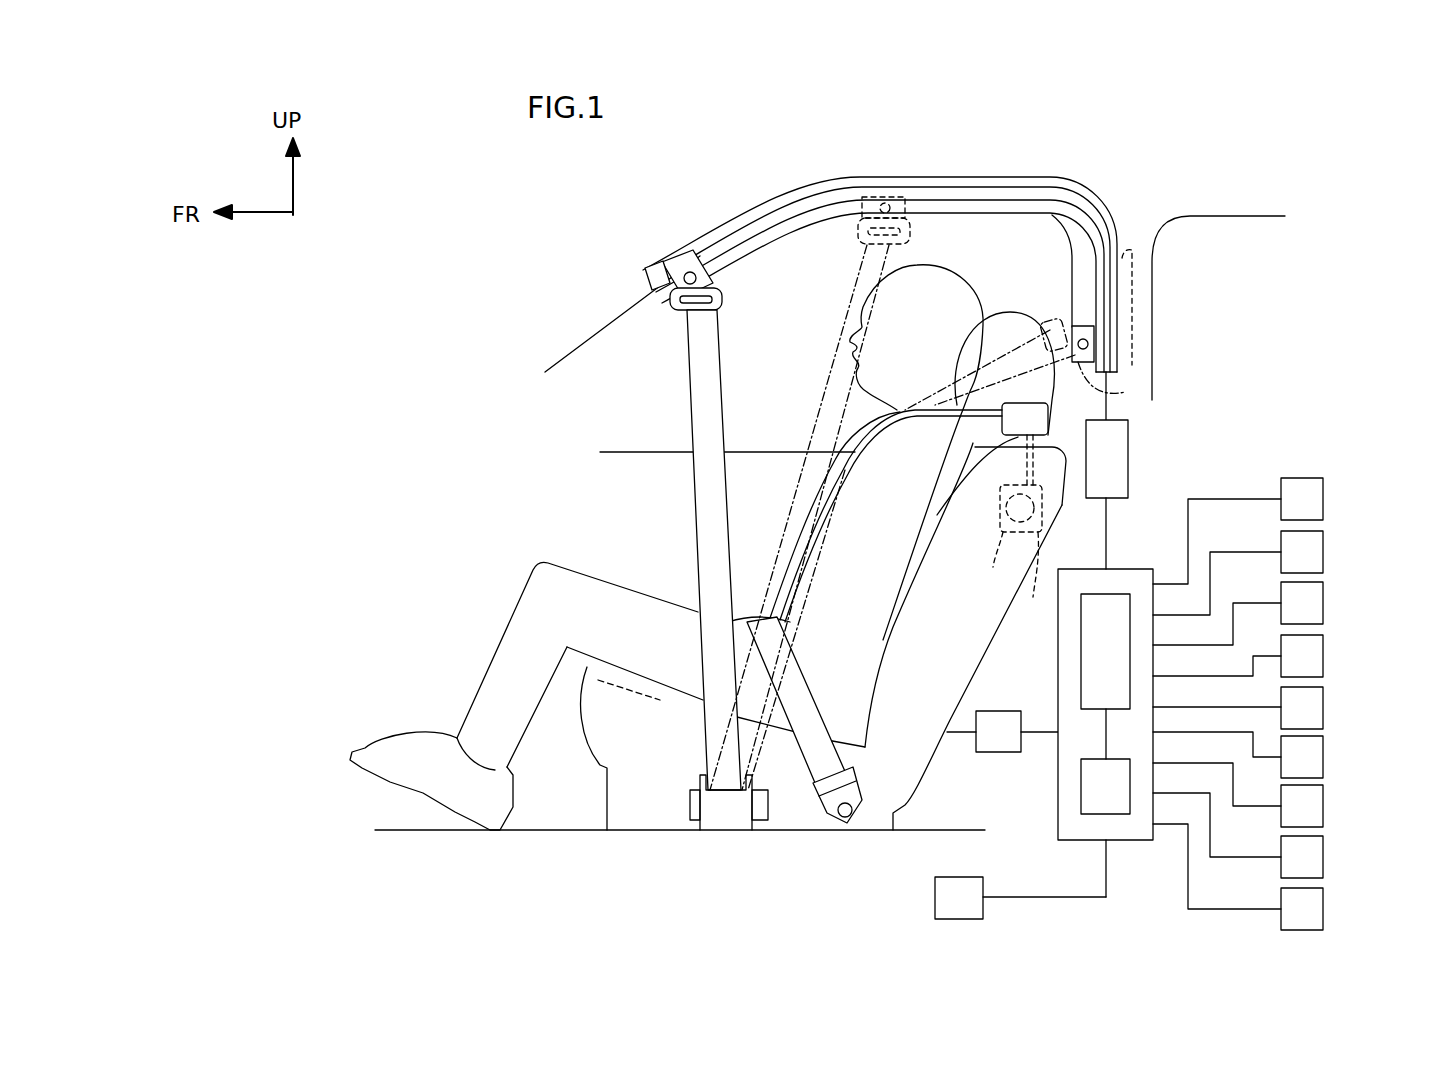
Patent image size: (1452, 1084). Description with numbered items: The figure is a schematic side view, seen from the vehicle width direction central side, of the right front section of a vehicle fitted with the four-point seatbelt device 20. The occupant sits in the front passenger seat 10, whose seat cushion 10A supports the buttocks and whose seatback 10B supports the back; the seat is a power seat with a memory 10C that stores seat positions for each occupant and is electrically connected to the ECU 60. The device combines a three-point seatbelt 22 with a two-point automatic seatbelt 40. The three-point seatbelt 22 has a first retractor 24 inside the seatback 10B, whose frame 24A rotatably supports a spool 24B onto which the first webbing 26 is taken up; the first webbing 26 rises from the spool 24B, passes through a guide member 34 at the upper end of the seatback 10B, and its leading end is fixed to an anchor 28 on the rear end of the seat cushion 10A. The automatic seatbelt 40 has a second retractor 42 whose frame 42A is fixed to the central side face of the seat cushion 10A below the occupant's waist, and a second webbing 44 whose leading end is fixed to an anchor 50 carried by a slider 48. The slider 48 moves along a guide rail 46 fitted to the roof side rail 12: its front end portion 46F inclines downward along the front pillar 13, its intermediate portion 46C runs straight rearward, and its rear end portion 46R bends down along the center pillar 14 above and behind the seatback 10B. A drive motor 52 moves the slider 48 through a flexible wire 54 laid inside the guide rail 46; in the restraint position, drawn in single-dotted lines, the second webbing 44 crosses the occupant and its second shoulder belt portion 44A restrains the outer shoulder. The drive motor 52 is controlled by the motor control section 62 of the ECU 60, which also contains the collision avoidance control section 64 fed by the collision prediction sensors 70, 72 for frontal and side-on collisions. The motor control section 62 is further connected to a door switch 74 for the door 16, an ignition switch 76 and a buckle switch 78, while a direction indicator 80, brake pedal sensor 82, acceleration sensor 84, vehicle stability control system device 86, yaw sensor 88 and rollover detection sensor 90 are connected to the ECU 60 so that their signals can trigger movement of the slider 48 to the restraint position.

The front passenger seat 10 is at (814, 571).
The seat cushion 10A is at (597, 733).
The seatback 10B is at (978, 650).
The memory 10C is at (1000, 755).
The roof side rail 12 is at (945, 207).
The front pillar 13 is at (611, 325).
The center pillar 14 is at (1053, 213).
The door 16 is at (645, 467).
The four-point seatbelt device 20 is at (1125, 190).
The three-point seatbelt 22 is at (977, 520).
The first retractor 24 is at (1032, 513).
The frame 24A is at (1042, 520).
The spool 24B is at (1006, 500).
The first webbing 26 is at (962, 432).
The anchor 28 is at (829, 818).
The guide member 34 is at (961, 491).
The two-point automatic seatbelt 40 is at (677, 537).
The second retractor 42 is at (712, 848).
The frame 42A is at (730, 813).
The second webbing 44 is at (842, 517).
The second shoulder belt portion 44A is at (907, 412).
The guide rail 46 is at (750, 197).
The front end portion 46F is at (715, 222).
The intermediate portion 46C is at (935, 177).
The rear end portion 46R is at (1090, 278).
The slider 48 is at (676, 262).
The anchor 50 is at (852, 238).
The drive motor 52 is at (1130, 460).
The wire 54 is at (1107, 402).
The ECU 60 is at (1104, 706).
The motor control section 62 is at (1115, 592).
The collision avoidance control section 64 is at (1098, 815).
The collision prediction sensor 70 is at (971, 898).
The collision prediction sensor 72 is at (935, 897).
The door switch 74 is at (1325, 499).
The ignition switch 76 is at (1325, 552).
The buckle switch 78 is at (1325, 603).
The direction indicator 80 is at (1325, 656).
The brake pedal sensor 82 is at (1325, 708).
The acceleration sensor 84 is at (1325, 757).
The vehicle stability control system device 86 is at (1325, 806).
The yaw sensor 88 is at (1325, 857).
The rollover detection sensor 90 is at (1325, 909).